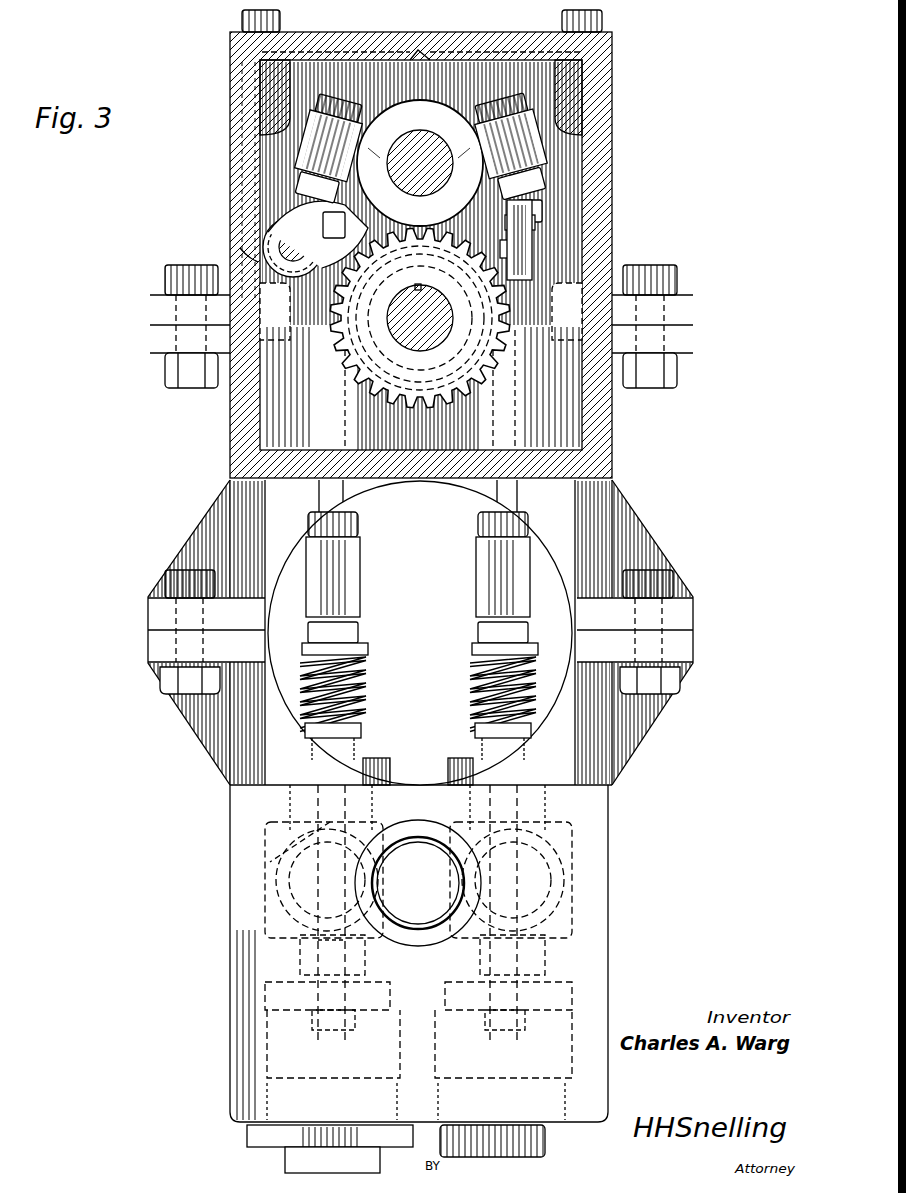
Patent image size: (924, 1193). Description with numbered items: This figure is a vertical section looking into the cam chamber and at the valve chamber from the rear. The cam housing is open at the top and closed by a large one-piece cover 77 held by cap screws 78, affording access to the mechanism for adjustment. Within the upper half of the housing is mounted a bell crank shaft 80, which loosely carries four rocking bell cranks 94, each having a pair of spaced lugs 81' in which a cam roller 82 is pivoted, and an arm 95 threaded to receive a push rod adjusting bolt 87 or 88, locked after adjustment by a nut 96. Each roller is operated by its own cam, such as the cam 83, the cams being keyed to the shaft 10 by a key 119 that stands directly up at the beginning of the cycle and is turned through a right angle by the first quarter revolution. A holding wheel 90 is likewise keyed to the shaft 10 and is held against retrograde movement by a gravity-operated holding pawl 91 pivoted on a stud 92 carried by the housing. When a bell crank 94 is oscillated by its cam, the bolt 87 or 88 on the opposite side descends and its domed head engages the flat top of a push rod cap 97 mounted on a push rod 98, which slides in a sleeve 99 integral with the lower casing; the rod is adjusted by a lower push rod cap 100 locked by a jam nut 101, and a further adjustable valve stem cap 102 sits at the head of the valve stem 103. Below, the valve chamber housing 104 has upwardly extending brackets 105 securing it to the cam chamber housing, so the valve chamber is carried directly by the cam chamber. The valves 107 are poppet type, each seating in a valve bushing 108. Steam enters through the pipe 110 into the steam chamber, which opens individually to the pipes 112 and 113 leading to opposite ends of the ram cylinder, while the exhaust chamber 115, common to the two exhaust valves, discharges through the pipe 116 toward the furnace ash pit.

The shaft 10 is at (415, 350).
The cover 77 is at (612, 52).
The cap screws 78 is at (602, 22).
The bell crank shaft 80 is at (410, 185).
The spaced lugs 81' is at (569, 150).
The cam rollers 82 is at (532, 240).
The cam 83 is at (535, 222).
The push rod adjusting bolt 87 is at (540, 186).
The push rod adjusting bolt 88 is at (310, 182).
The holding wheel 90 is at (515, 350).
The holding pawl 91 is at (317, 215).
The stud 92 is at (262, 240).
The bell crank 94 is at (440, 120).
The arm 95 is at (318, 130).
The nut 96 is at (313, 107).
The push rod cap 97 is at (313, 199).
The push rod 98 is at (238, 250).
The sleeve 99 is at (290, 388).
The lower push rod cap 100 is at (350, 585).
The jam nut 101 is at (358, 524).
The valve stem cap 102 is at (312, 603).
The valve stem 103 is at (575, 878).
The valve chamber housing 104 is at (585, 955).
The brackets 105 is at (598, 720).
The valves 107 is at (575, 1000).
The valve bushing 108 is at (318, 945).
The pipe 110 is at (285, 1160).
The pipe 112 is at (560, 897).
The pipe 113 is at (355, 883).
The exhaust chamber 115 is at (270, 862).
The pipe 116 is at (372, 875).
The key 119 is at (422, 288).